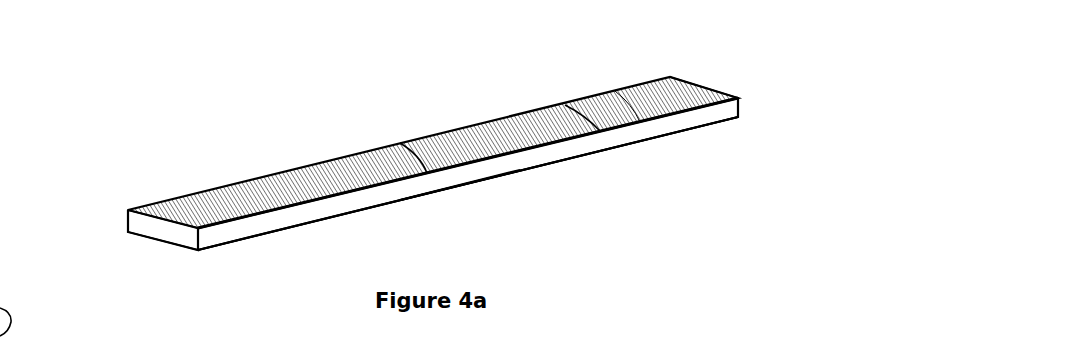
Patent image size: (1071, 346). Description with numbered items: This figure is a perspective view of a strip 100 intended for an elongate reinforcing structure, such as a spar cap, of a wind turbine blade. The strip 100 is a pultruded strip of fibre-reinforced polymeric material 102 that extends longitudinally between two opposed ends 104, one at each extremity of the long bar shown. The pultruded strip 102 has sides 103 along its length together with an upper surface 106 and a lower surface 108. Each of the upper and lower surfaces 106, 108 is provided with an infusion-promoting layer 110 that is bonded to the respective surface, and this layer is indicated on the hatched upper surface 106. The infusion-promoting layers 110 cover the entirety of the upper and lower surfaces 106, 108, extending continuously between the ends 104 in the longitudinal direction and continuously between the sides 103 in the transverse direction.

The strip 100 is at (310, 108).
The fibre-reinforced polymeric material 102 is at (577, 147).
The sides 103 is at (278, 228).
The opposed ends 104 is at (110, 205).
The upper surface 106 is at (483, 137).
The lower surface 108 is at (462, 183).
The infusion-promoting layer 110 is at (570, 113).